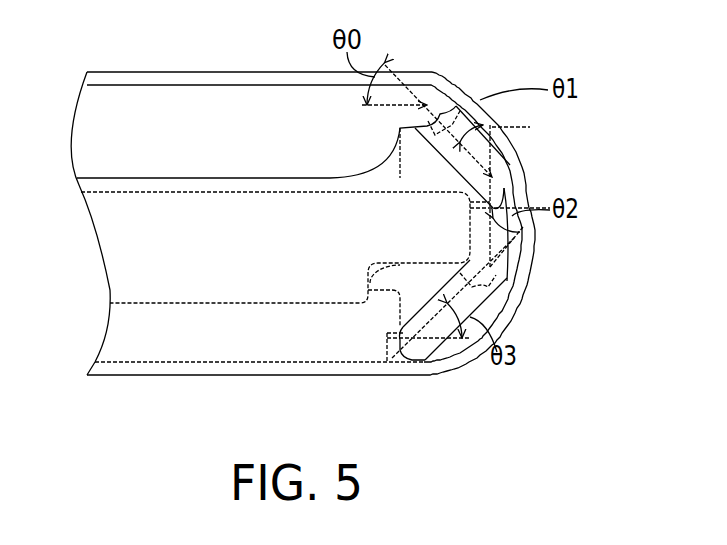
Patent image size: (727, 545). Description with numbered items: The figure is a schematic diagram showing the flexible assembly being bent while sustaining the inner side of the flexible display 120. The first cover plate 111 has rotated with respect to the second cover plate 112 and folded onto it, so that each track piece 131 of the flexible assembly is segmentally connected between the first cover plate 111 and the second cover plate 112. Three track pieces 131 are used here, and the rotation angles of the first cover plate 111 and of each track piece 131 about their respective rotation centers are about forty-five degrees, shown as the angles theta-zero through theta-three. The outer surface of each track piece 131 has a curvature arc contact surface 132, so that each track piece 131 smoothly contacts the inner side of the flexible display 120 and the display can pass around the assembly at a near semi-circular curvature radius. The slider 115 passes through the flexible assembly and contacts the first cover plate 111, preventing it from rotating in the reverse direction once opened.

The first cover plate 111 is at (242, 112).
The second cover plate 112 is at (297, 338).
The slider 115 is at (203, 285).
The flexible display 120 is at (291, 80).
The track piece 131 is at (503, 143).
The curvature arc contact surface 132 is at (515, 170).